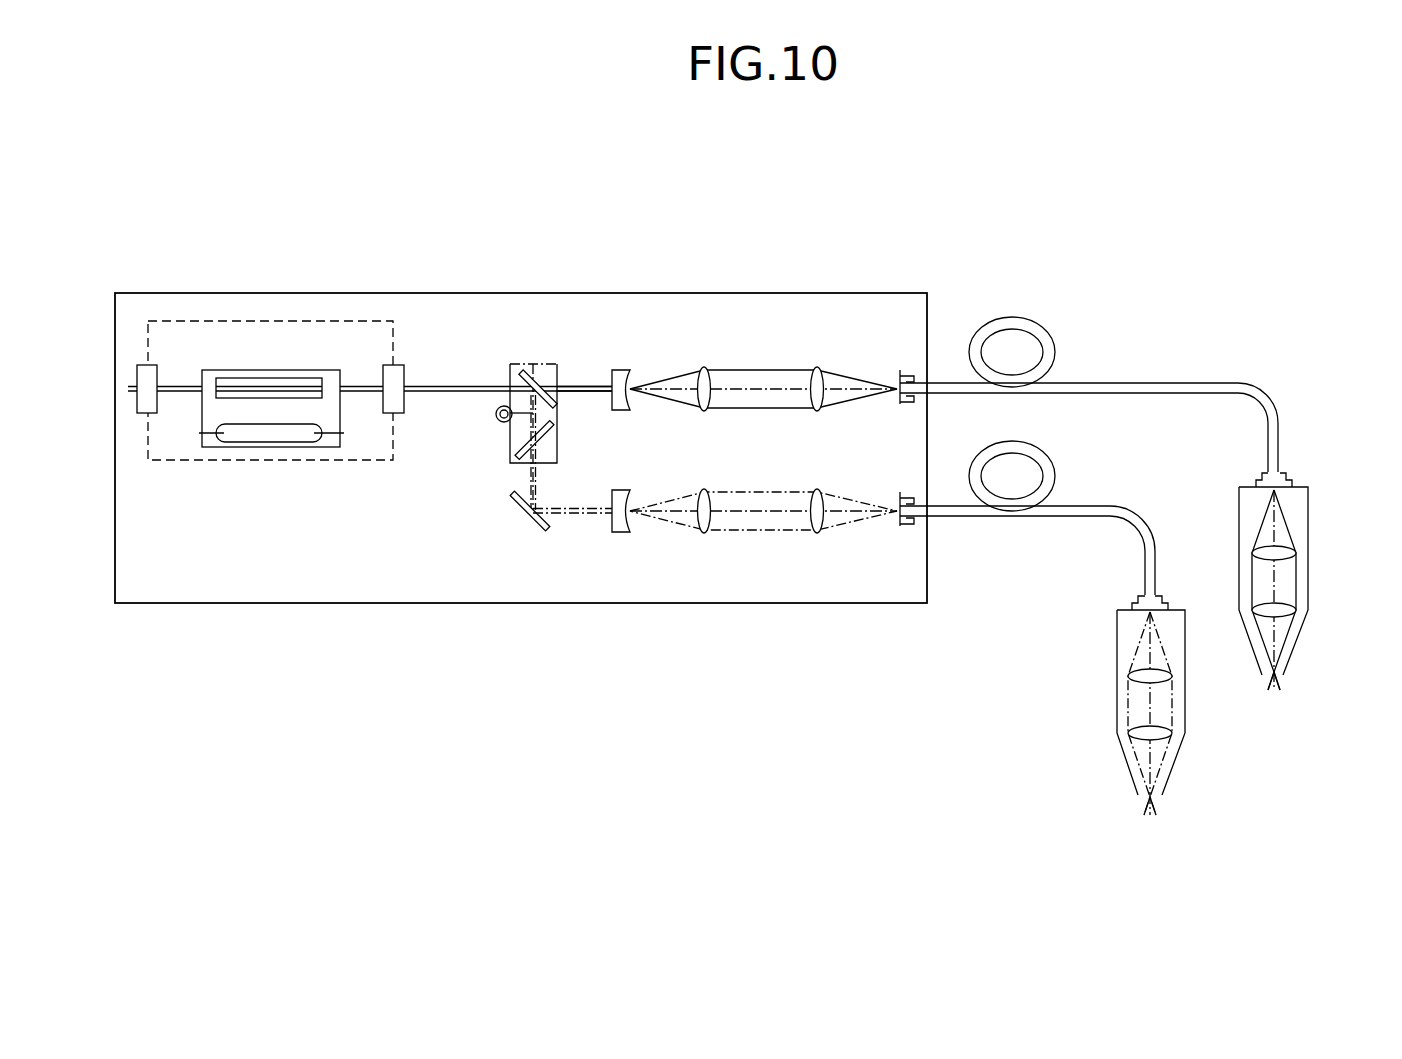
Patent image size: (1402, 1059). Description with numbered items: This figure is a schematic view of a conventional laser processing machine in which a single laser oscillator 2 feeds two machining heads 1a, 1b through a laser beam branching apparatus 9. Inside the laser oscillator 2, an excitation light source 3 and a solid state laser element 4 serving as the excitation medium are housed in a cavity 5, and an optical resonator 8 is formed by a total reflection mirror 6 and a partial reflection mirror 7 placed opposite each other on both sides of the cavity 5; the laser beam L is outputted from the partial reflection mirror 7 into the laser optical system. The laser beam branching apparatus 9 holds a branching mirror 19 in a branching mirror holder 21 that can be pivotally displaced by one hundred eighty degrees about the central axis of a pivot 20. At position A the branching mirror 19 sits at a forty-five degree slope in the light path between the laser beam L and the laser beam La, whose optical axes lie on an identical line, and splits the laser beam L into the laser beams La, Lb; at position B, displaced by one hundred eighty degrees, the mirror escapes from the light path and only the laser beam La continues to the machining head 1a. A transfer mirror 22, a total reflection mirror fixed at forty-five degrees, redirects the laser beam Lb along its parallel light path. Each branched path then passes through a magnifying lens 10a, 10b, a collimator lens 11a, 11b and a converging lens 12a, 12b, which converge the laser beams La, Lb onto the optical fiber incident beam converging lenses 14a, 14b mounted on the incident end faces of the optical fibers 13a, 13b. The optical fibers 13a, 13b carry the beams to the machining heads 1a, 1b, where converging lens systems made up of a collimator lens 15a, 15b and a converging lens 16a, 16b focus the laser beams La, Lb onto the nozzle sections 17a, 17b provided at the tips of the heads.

The machining head 1a is at (1310, 574).
The machining head 1b is at (1113, 710).
The laser oscillator 2 is at (526, 288).
The excitation light source 3 is at (250, 434).
The solid state laser element 4 is at (247, 381).
The cavity 5 is at (333, 448).
The total reflection mirror 6 is at (150, 380).
The partial reflection mirror 7 is at (388, 378).
The optical resonator 8 is at (189, 474).
The laser beam branching apparatus 9 is at (537, 358).
The magnifying lens 10a is at (625, 372).
The magnifying lens 10b is at (622, 532).
The collimator lens 11a is at (706, 378).
The collimator lens 11b is at (712, 520).
The converging lens 12a is at (818, 378).
The converging lens 12b is at (822, 520).
The optical fiber 13a is at (1192, 383).
The optical fiber 13b is at (1107, 506).
The optical fiber incident beam converging lens 14a is at (893, 372).
The optical fiber incident beam converging lens 14b is at (893, 527).
The collimator lens 15a is at (1290, 552).
The collimator lens 15b is at (1140, 678).
The converging lens 16a is at (1292, 610).
The converging lens 16b is at (1140, 736).
The nozzle section 17a is at (1284, 672).
The nozzle section 17b is at (1142, 795).
The branching mirror 19 is at (583, 402).
The pivot 20 is at (497, 413).
The branching mirror holder 21 is at (545, 455).
The transfer mirror 22 is at (518, 513).
The beam branching position A is at (521, 374).
The escaping position B is at (519, 443).
The laser beam L is at (428, 386).
The laser beam La is at (588, 384).
The laser beam Lb is at (578, 518).